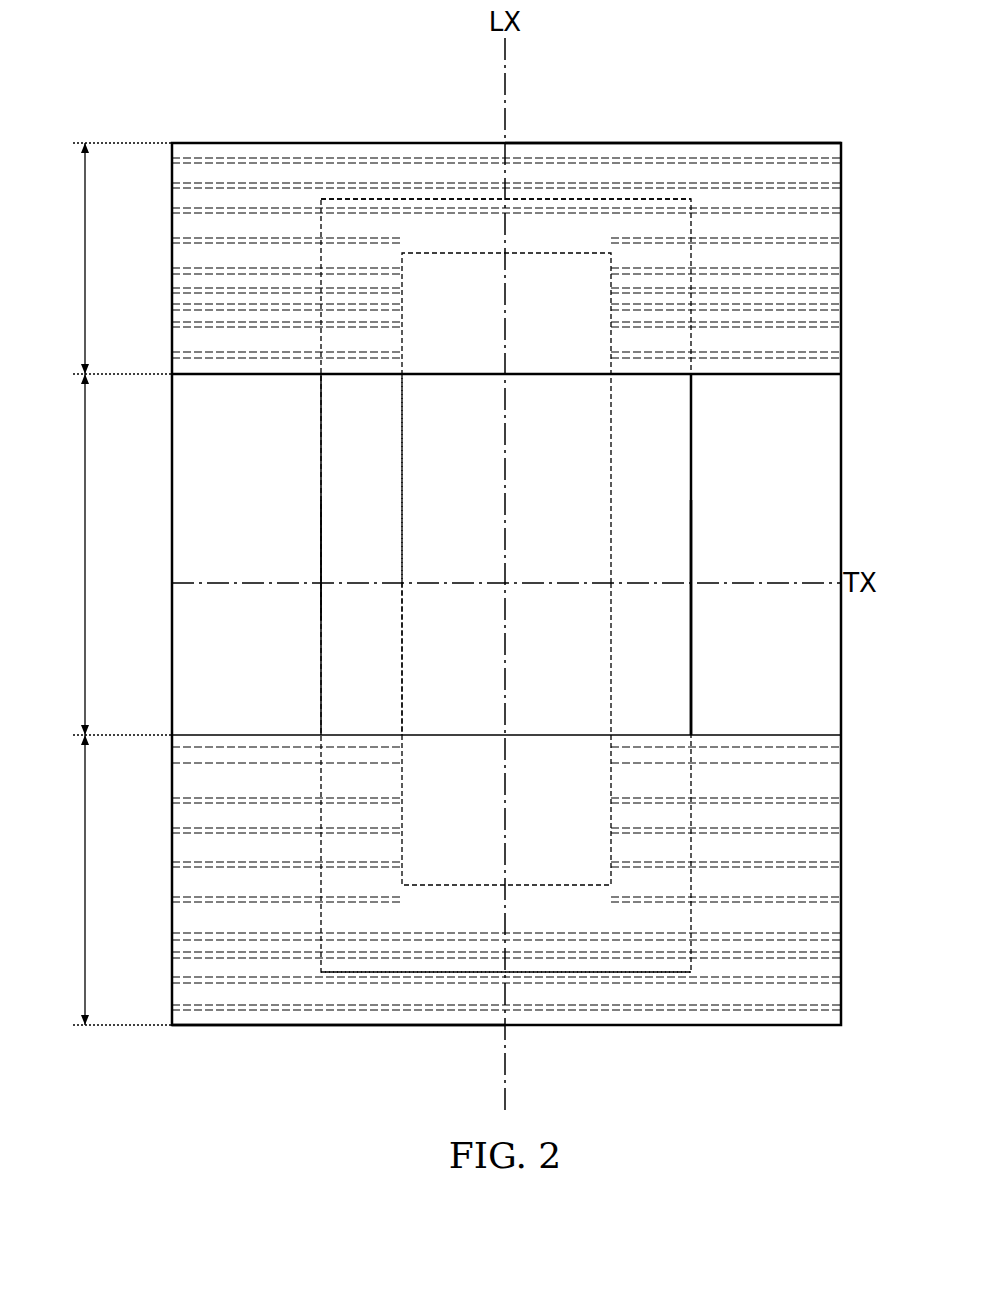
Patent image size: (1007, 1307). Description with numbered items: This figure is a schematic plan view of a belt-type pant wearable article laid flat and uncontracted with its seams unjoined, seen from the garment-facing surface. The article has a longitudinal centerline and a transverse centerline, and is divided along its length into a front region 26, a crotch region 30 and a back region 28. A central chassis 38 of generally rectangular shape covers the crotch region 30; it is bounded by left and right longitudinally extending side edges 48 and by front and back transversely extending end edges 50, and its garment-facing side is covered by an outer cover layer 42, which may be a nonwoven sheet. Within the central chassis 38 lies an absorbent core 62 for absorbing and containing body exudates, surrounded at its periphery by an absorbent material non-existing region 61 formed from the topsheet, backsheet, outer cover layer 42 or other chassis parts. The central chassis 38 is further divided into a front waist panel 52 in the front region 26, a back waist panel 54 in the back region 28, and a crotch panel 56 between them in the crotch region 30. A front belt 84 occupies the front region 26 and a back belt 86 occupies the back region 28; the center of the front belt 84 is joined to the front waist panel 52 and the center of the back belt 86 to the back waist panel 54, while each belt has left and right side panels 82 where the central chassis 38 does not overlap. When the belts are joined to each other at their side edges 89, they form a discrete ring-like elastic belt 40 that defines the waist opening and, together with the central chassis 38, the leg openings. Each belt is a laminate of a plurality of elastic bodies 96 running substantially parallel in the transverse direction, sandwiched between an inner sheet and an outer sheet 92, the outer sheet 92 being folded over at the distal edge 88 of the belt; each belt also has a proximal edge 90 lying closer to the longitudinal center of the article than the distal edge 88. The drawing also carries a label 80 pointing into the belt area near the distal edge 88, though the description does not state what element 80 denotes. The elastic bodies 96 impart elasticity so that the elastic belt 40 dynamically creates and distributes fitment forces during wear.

The front region 26 is at (85, 258).
The back region 28 is at (85, 880).
The crotch region 30 is at (85, 555).
The central chassis 38 is at (694, 540).
The ring-like elastic belt 40 is at (643, 75).
The outer cover layer 42 is at (683, 638).
The side edges 48 is at (321, 482).
The end edges 50 is at (405, 198).
The front waist panel 52 is at (440, 326).
The back waist panel 54 is at (440, 828).
The crotch panel 56 is at (319, 557).
The absorbent material non-existing region 61 is at (440, 245).
The absorbent core 62 is at (402, 507).
The elastic region 80 is at (477, 176).
The side panel 82 is at (235, 337).
The front belt 84 is at (772, 143).
The back belt 86 is at (210, 1025).
The distal edge 88 is at (531, 143).
The side edges 89 is at (172, 225).
The proximal edge 90 is at (296, 374).
The outer sheet 92 is at (209, 148).
The elastic bodies 96 is at (182, 192).